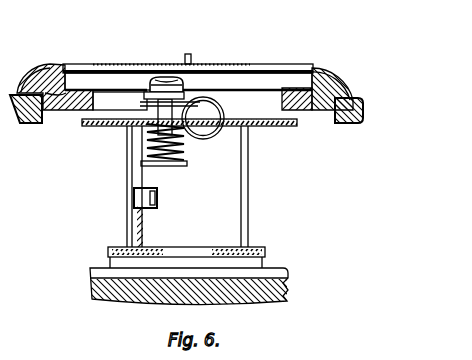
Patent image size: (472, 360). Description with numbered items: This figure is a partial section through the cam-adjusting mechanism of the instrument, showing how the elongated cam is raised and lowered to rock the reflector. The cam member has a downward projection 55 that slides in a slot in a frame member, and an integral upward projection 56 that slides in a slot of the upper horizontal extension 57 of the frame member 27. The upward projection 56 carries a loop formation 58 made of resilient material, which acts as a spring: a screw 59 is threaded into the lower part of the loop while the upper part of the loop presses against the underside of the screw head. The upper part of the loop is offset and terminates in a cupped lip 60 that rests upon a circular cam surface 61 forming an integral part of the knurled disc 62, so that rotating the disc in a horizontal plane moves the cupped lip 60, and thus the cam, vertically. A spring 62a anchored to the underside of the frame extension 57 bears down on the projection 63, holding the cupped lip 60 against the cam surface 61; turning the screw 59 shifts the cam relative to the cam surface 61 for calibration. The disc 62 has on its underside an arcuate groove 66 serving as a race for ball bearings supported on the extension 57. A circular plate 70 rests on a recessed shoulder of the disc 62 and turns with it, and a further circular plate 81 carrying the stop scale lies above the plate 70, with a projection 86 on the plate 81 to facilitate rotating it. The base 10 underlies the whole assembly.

The base 10 is at (291, 292).
The frame member 27 is at (233, 178).
The downward projection 55 is at (132, 258).
The upward projection 56 is at (142, 135).
The upper horizontal extension 57 is at (114, 128).
The loop formation 58 is at (206, 136).
The screw 59 is at (146, 95).
The cupped lip 60 is at (170, 78).
The circular cam surface 61 is at (107, 90).
The knurled disc 62 is at (343, 71).
The spring 62a is at (187, 153).
The projection 63 is at (171, 168).
The arcuate groove 66 is at (68, 113).
The circular plate 70 is at (73, 66).
The circular plate 81 is at (105, 66).
The projection 86 is at (192, 59).